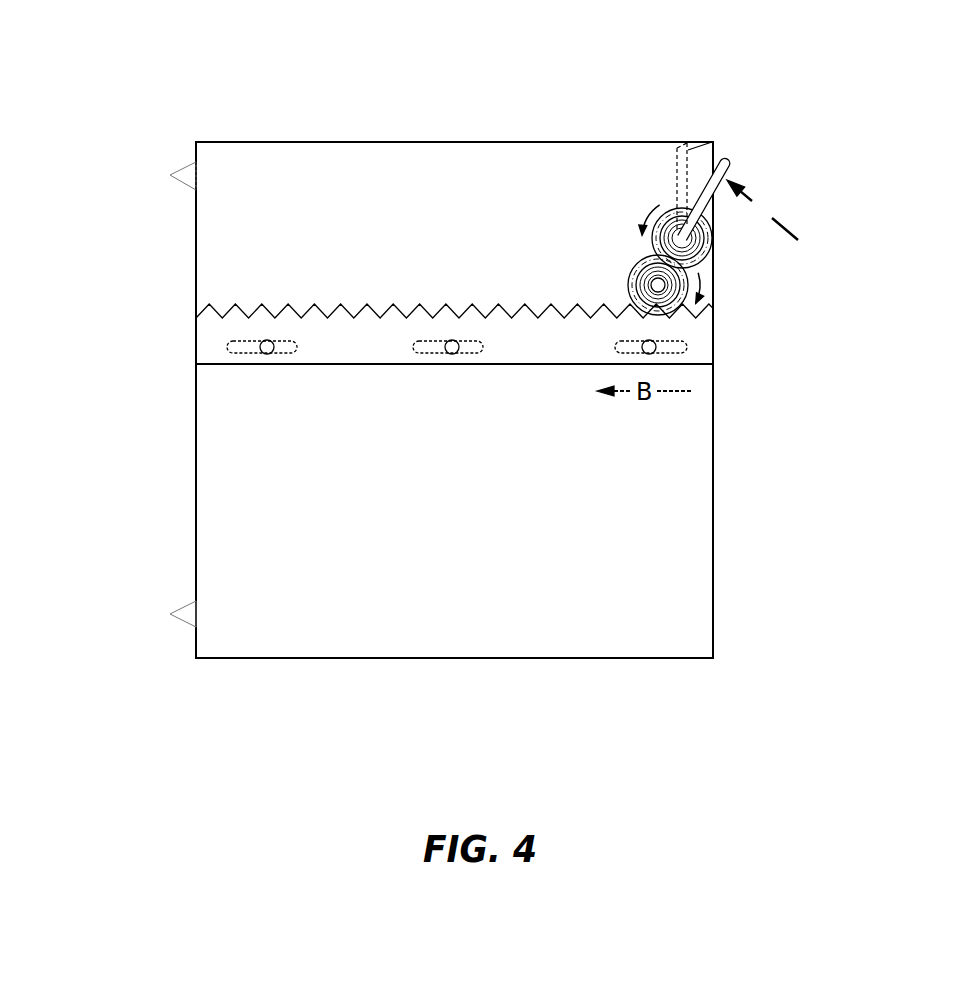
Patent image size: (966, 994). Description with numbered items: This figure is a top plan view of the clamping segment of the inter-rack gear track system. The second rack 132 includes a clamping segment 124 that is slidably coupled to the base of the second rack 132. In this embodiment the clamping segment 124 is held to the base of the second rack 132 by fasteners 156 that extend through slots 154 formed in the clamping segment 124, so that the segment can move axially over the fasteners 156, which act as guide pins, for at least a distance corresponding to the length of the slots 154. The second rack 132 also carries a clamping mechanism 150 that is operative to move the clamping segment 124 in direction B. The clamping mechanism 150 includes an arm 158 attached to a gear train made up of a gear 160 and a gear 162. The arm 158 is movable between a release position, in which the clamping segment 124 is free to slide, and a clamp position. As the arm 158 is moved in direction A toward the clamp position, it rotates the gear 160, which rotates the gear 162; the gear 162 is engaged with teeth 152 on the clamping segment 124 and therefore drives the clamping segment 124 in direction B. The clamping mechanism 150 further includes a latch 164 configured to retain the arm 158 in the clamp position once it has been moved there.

The clamping segment 124 is at (332, 257).
The second rack 132 is at (562, 672).
The clamping mechanism 150 is at (717, 197).
The teeth 152 is at (400, 305).
The slots 154 is at (420, 351).
The fasteners 156 is at (452, 355).
The arm 158 is at (728, 163).
The gear 160 is at (653, 208).
The gear 162 is at (630, 275).
The latch 164 is at (697, 142).